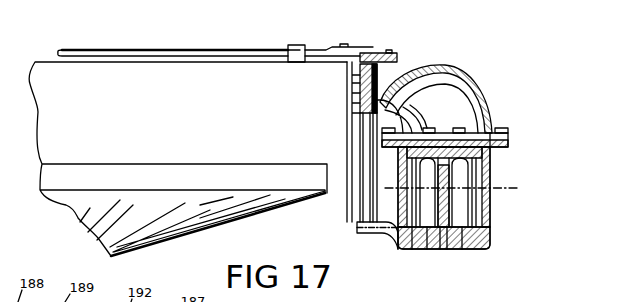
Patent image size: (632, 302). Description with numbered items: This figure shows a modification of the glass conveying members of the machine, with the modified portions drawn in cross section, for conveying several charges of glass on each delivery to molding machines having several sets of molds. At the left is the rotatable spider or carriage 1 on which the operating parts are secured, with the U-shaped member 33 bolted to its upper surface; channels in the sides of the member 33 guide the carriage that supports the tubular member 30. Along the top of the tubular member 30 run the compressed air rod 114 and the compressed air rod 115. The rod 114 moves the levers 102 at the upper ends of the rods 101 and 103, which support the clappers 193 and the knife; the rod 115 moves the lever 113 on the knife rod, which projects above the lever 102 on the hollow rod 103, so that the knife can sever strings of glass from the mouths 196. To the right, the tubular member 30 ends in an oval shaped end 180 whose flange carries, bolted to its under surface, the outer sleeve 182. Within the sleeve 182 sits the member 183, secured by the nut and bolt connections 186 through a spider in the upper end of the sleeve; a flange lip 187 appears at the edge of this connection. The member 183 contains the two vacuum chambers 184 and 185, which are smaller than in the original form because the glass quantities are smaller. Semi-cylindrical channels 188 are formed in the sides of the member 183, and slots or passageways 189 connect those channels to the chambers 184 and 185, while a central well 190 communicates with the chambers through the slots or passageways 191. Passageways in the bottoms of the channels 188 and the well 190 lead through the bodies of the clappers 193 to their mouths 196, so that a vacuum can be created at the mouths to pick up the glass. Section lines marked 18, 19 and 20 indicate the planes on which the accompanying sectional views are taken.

The spider or carriage 1 is at (235, 207).
The U-shaped member 33 is at (170, 82).
The compressed air rod 114 is at (232, 50).
The compressed air rod 115 is at (334, 47).
The lever 113 is at (362, 52).
The lever 102 is at (390, 56).
The tubular member 30 is at (400, 73).
The rod 101 is at (372, 152).
The rod 103 is at (363, 191).
The oval shaped end 180 is at (438, 95).
The nut and bolt connection 186 is at (430, 132).
The well 190 is at (462, 134).
The flange lip 187 is at (477, 137).
The member 183 is at (484, 153).
The outer sleeve 182 is at (488, 201).
The clapper 193 is at (484, 239).
The vacuum chamber 184 is at (467, 248).
The slot or passageway 191 is at (447, 252).
The mouth 196 is at (429, 256).
The vacuum chamber 185 is at (415, 248).
The semi-cylindrical channel 188 is at (400, 214).
The slot or passageway 189 is at (412, 215).
The section line 18— 18 is at (326, 132).
The section line 19— 19 is at (346, 185).
The section line 20— 20 is at (333, 208).